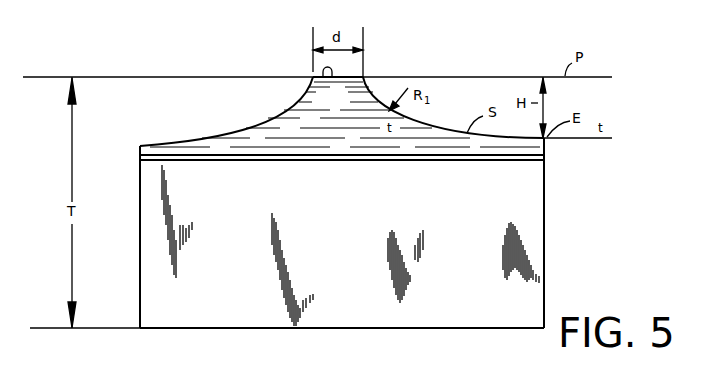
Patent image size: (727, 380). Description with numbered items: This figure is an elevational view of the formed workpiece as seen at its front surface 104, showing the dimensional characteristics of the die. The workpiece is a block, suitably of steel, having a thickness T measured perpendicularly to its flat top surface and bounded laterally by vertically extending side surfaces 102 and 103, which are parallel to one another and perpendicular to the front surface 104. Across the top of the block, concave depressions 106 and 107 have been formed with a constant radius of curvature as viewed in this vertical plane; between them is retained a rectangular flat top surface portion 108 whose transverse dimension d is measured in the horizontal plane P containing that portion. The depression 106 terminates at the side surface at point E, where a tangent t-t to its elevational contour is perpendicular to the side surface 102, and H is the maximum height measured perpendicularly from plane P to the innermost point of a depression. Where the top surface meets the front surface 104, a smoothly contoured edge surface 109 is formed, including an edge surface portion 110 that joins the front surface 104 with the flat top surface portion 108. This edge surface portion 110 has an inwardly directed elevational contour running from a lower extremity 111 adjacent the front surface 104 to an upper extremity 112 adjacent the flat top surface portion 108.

The side surface 102 is at (545, 223).
The side surface 103 is at (140, 243).
The front surface 104 is at (420, 305).
The depression 106 is at (433, 127).
The depression 107 is at (233, 133).
The flat top surface portion 108 is at (339, 97).
The smoothly contoured edge surface 109 is at (465, 156).
The edge surface portion 110 is at (367, 139).
The lower extremity 111 is at (330, 161).
The upper extremity 112 is at (365, 77).